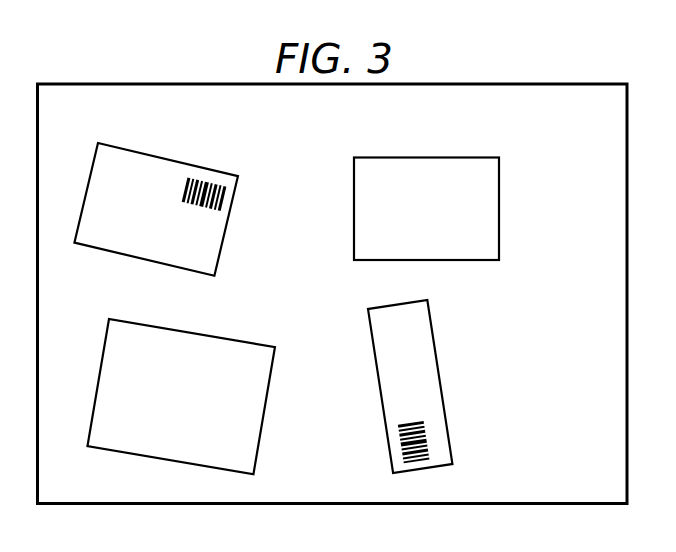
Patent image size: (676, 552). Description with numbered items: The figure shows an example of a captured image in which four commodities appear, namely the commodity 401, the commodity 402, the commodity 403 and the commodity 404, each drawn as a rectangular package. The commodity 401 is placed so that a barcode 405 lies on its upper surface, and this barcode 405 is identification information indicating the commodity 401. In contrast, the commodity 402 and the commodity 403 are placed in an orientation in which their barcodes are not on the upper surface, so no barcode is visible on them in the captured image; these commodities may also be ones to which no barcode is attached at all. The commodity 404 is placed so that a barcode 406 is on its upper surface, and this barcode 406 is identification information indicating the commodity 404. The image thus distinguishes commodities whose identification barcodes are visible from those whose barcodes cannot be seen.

The commodity 401 is at (127, 143).
The commodity 402 is at (419, 157).
The commodity 403 is at (149, 325).
The commodity 404 is at (418, 300).
The barcode 405 is at (225, 168).
The barcode 406 is at (433, 438).